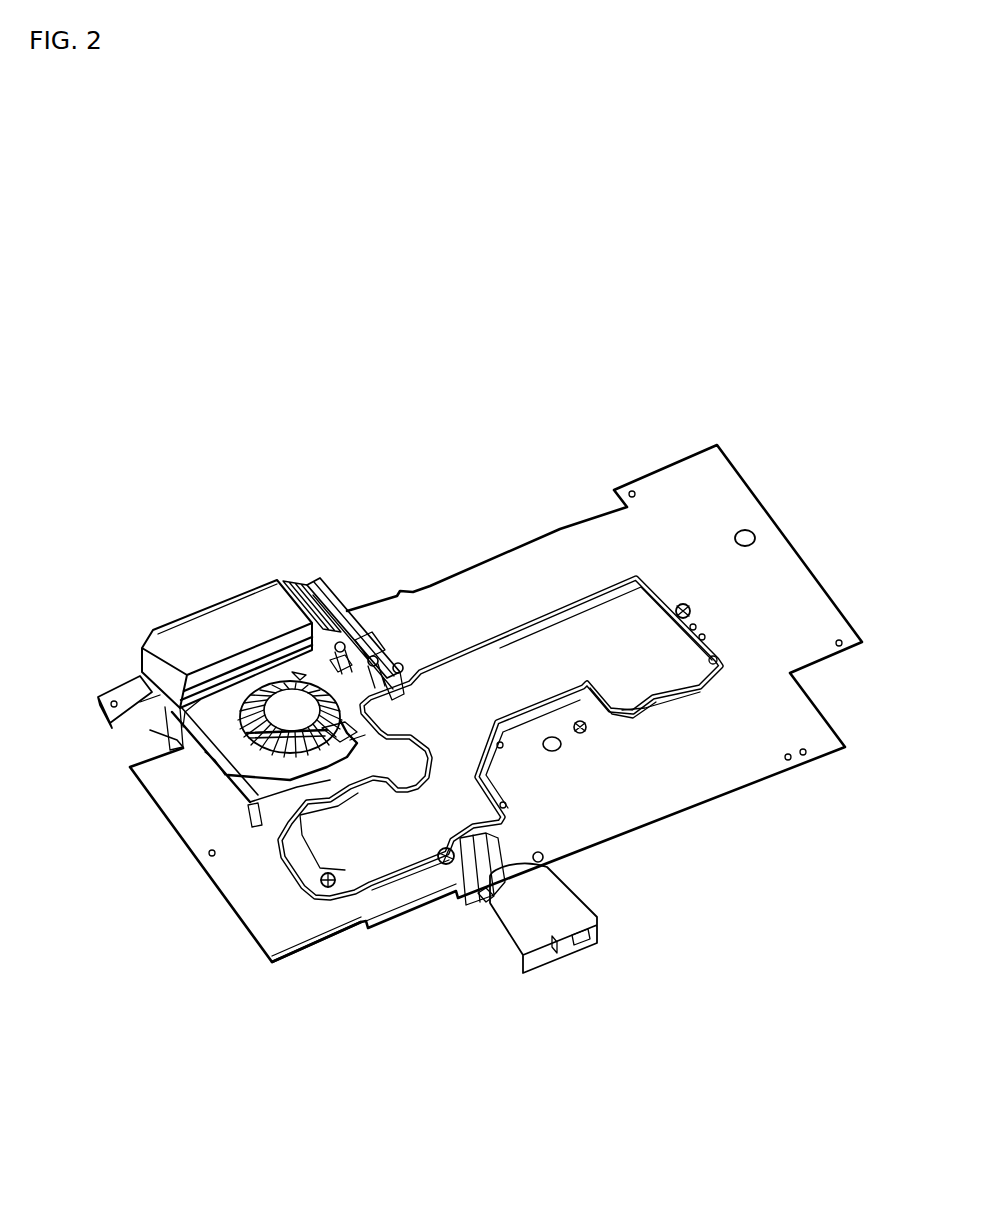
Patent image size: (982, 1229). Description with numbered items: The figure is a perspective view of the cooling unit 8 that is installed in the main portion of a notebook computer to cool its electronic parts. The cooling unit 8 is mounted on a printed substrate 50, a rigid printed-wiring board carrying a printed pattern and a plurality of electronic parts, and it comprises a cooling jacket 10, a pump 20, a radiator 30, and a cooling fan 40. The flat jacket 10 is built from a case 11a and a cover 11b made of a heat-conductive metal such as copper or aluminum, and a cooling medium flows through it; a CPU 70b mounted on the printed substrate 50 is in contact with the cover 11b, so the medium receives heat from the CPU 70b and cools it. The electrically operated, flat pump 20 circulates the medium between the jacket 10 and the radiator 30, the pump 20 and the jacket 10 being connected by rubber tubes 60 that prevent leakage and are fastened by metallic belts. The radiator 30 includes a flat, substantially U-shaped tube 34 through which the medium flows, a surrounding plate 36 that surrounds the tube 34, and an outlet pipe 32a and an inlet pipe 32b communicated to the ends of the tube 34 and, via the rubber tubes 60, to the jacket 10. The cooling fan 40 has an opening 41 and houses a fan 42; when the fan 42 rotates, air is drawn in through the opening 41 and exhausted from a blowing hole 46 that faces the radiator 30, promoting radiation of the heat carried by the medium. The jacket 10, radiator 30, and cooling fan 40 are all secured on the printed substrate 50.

The cooling unit 8 is at (149, 370).
The cooling jacket 10 is at (635, 577).
The case 11a is at (652, 700).
The cover 11b is at (577, 647).
The pump 20 is at (593, 950).
The radiator 30 is at (243, 587).
The outlet pipe 32a is at (352, 608).
The inlet pipe 32b is at (353, 633).
The tube 34 is at (237, 665).
The surrounding plate 36 is at (190, 640).
The cooling fan 40 is at (204, 762).
The opening 41 is at (180, 712).
The fan 42 is at (208, 757).
The blowing hole 46 is at (140, 655).
The printed substrate 50 is at (767, 503).
The rubber tubes 60 is at (397, 652).
The CPU 70b is at (372, 890).